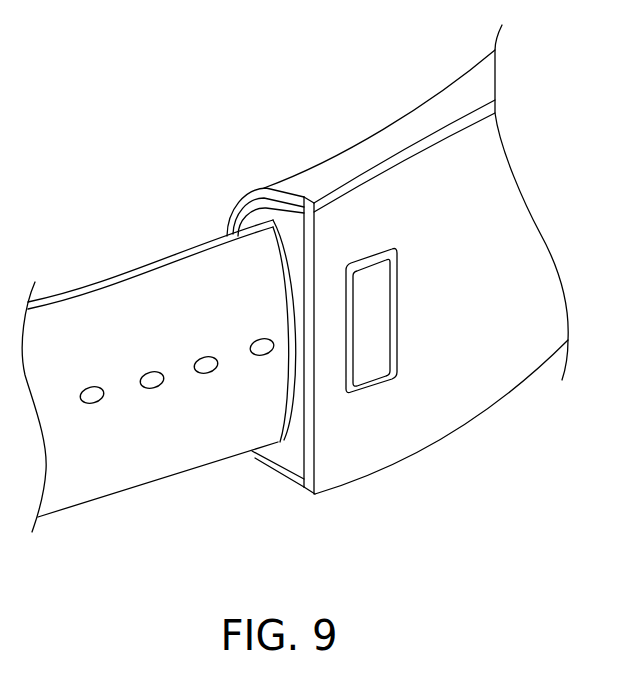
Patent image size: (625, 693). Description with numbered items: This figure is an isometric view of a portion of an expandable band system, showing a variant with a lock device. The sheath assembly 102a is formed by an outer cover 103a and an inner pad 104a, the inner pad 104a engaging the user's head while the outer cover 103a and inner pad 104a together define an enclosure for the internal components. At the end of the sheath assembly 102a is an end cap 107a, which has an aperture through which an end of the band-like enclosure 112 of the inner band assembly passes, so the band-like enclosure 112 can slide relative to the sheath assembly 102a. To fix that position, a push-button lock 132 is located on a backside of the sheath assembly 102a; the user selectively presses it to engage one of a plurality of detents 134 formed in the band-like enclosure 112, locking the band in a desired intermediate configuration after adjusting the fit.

The sheath assembly 102a is at (213, 152).
The inner pad 104a is at (349, 170).
The outer cover 103a is at (393, 433).
The push-button lock 132 is at (373, 327).
The detents 134 is at (210, 353).
The band-like enclosure 112 is at (138, 465).
The end cap 107a is at (292, 457).